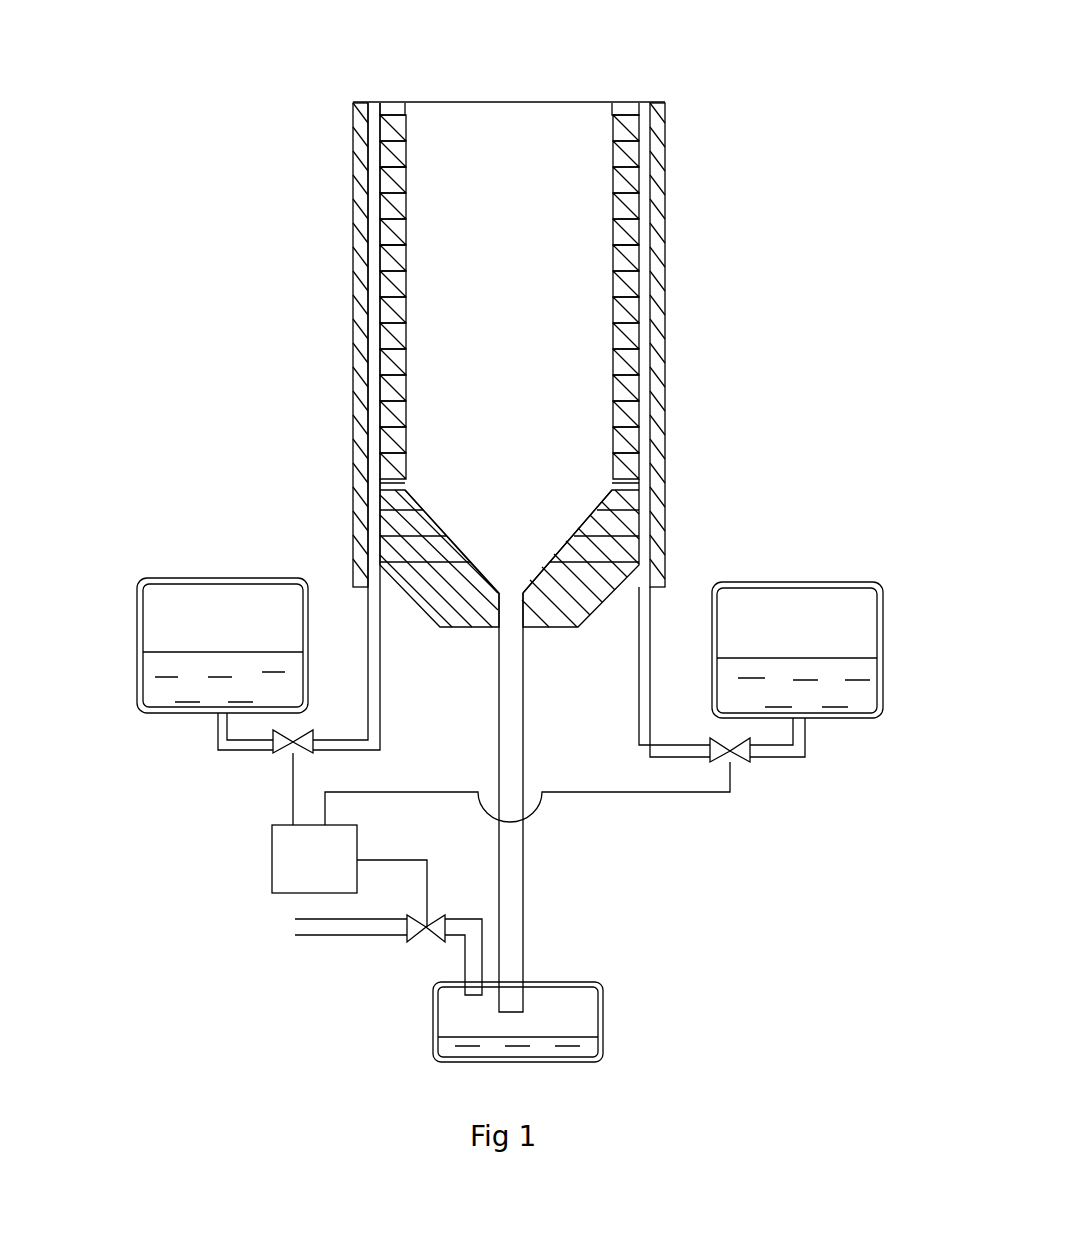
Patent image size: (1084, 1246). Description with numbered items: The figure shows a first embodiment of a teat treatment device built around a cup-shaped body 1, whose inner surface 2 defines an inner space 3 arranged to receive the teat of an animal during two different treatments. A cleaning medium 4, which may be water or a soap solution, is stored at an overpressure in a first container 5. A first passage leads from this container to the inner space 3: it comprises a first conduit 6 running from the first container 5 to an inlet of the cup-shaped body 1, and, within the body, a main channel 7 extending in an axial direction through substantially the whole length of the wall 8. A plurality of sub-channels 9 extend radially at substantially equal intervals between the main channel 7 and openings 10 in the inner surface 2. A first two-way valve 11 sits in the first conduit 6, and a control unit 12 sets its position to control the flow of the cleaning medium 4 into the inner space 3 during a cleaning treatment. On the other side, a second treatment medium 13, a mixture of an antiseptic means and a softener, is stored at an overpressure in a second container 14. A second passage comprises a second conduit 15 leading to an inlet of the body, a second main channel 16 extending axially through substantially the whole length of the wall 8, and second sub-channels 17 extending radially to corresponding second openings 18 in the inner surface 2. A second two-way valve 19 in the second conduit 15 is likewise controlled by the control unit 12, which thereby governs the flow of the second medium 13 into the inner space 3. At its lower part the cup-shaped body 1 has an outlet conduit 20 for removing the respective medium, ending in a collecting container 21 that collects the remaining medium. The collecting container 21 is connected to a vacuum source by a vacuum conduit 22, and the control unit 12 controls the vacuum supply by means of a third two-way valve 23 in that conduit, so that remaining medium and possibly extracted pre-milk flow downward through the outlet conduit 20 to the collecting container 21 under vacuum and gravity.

The cup-shaped body 1 is at (650, 86).
The inner surface 2 is at (405, 368).
The inner space 3 is at (524, 428).
The cleaning medium 4 is at (177, 683).
The first container 5 is at (217, 598).
The first conduit 6 is at (377, 707).
The main channel 7 is at (375, 465).
The wall 8 is at (362, 290).
The sub-channels 9 is at (397, 167).
The openings 10 is at (405, 245).
The first two-way valve 11 is at (280, 745).
The control unit 12 is at (297, 860).
The second treatment medium 13 is at (820, 693).
The second container 14 is at (793, 615).
The second conduit 15 is at (647, 698).
The second main channel 16 is at (648, 414).
The second sub-channels 17 is at (620, 167).
The second openings 18 is at (613, 246).
The second two-way valve 19 is at (740, 750).
The outlet conduit 20 is at (510, 705).
The collecting container 21 is at (558, 1012).
The vacuum conduit 22 is at (332, 930).
The third two-way valve 23 is at (430, 927).